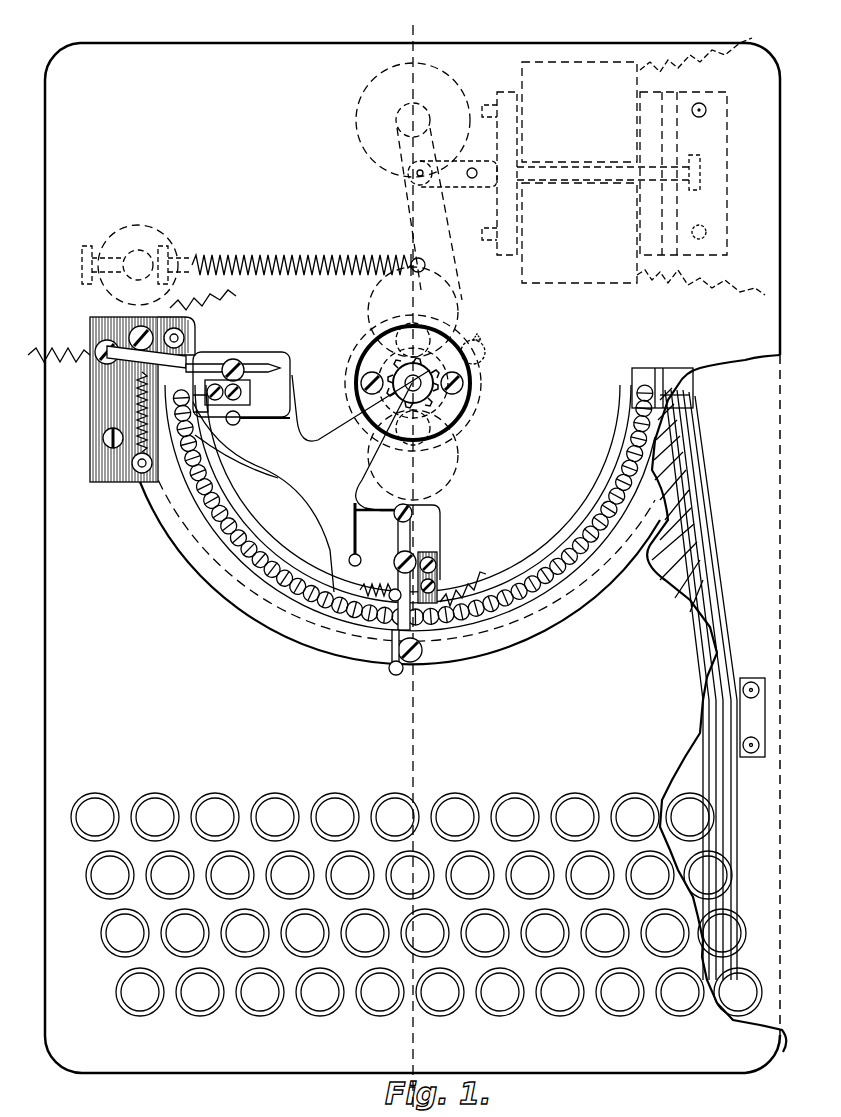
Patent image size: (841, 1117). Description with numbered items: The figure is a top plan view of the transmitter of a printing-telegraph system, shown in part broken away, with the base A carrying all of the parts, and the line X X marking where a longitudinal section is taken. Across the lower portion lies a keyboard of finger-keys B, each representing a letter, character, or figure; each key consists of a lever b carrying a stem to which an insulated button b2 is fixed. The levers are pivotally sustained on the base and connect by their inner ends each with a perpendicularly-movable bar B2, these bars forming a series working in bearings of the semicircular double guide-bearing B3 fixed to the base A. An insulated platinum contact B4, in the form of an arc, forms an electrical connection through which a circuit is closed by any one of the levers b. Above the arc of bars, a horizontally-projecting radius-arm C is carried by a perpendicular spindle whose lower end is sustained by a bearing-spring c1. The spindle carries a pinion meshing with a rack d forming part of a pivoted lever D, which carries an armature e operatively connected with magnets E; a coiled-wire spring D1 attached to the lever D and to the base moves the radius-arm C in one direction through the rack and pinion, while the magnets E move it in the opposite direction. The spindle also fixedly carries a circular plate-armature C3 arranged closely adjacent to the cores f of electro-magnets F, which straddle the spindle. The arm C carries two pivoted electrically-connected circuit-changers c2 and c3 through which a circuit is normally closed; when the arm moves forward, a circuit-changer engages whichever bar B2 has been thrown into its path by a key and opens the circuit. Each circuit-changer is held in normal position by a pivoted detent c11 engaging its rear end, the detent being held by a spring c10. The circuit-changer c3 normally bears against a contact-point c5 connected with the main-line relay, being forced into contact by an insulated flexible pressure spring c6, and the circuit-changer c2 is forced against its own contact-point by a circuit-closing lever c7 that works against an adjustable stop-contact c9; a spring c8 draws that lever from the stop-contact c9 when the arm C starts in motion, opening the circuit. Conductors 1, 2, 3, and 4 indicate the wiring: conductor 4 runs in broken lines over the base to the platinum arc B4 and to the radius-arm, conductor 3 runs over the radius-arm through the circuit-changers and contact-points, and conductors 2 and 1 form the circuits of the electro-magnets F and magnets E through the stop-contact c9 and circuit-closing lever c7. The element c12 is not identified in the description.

The base A is at (393, 409).
The finger-keys B is at (425, 895).
The perpendicularly-movable bar B2 is at (222, 508).
The semicircular double guide-bearing B3 is at (208, 486).
The insulated platinum contact B4 is at (672, 392).
The lever b is at (688, 432).
The insulated button b2 is at (431, 904).
The radius-arm C is at (252, 352).
The bearing-spring c1 is at (370, 375).
The circuit-changer c2 is at (334, 379).
The circular plate-armature C3 is at (470, 399).
The circuit-changer c3 is at (398, 549).
The contact-point c5 is at (398, 577).
The flexible pressure bearing or spring c6 is at (399, 652).
The circuit-closing lever c7 is at (193, 360).
The spring c8 is at (138, 412).
The adjustable stop-contact c9 is at (192, 353).
The spring c10 is at (355, 528).
The pivoted detent c11 is at (290, 385).
The screw c12 is at (409, 517).
The pivoted lever D is at (406, 250).
The coiled-wire spring D1 is at (253, 265).
The rack d is at (485, 352).
The magnets E is at (604, 172).
The armature e is at (457, 174).
The electro-magnets F is at (413, 383).
The cores f is at (413, 384).
The section line X is at (409, 557).
The conductor 1 is at (701, 282).
The conductor 2 is at (132, 319).
The conductor 3 is at (463, 576).
The conductor 4 is at (696, 45).